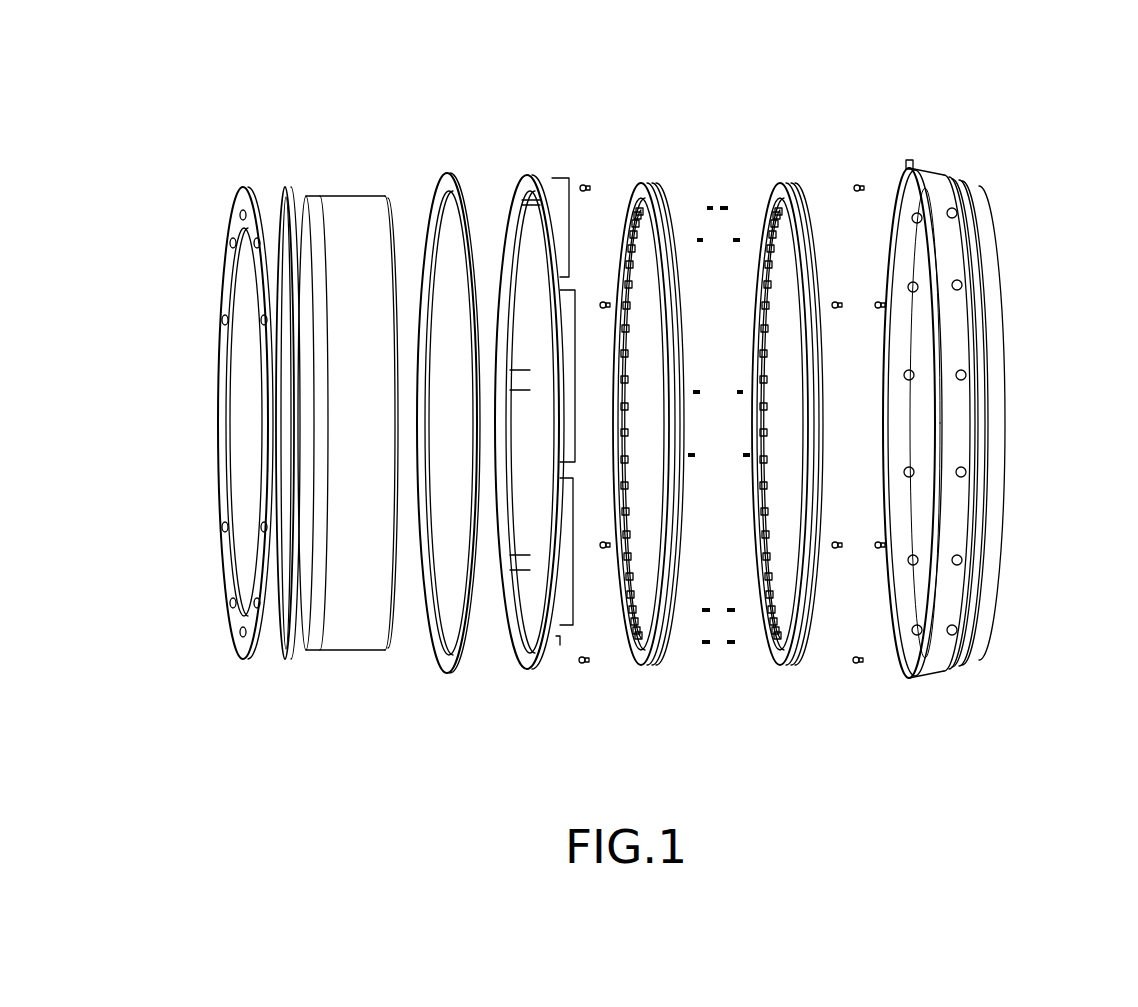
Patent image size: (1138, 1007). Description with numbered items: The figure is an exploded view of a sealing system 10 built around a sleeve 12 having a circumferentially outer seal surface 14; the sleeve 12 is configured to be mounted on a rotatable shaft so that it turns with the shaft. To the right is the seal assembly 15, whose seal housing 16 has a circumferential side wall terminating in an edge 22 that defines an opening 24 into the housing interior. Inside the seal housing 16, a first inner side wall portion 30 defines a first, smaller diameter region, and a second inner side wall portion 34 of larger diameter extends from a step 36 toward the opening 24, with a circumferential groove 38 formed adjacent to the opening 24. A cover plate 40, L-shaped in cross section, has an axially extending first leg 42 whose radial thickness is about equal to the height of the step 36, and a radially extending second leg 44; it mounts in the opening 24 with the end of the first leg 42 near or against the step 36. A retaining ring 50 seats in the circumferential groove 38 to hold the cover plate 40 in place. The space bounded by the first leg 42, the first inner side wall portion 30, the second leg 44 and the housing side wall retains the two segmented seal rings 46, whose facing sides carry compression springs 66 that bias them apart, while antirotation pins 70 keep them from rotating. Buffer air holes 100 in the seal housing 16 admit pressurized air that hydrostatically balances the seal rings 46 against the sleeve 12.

The sealing system 10 is at (244, 128).
The sleeve 12 is at (238, 217).
The circumferentially outer seal surface 14 is at (333, 207).
The seal assembly 15 is at (957, 86).
The seal housing 16 is at (960, 185).
The edge 22 is at (905, 180).
The opening 24 is at (862, 224).
The first inner side wall portion 30 is at (922, 378).
The second inner side wall portion 34 is at (895, 455).
The step 36 is at (912, 430).
The circumferential groove 38 is at (903, 630).
The cover plate 40 is at (516, 684).
The first leg 42 is at (557, 178).
The second leg 44 is at (525, 180).
The seal rings 46 is at (656, 162).
The retaining ring 50 is at (437, 157).
The compression springs 66 is at (709, 662).
The antirotation pins 70 is at (583, 668).
The buffer air holes 100 is at (950, 212).